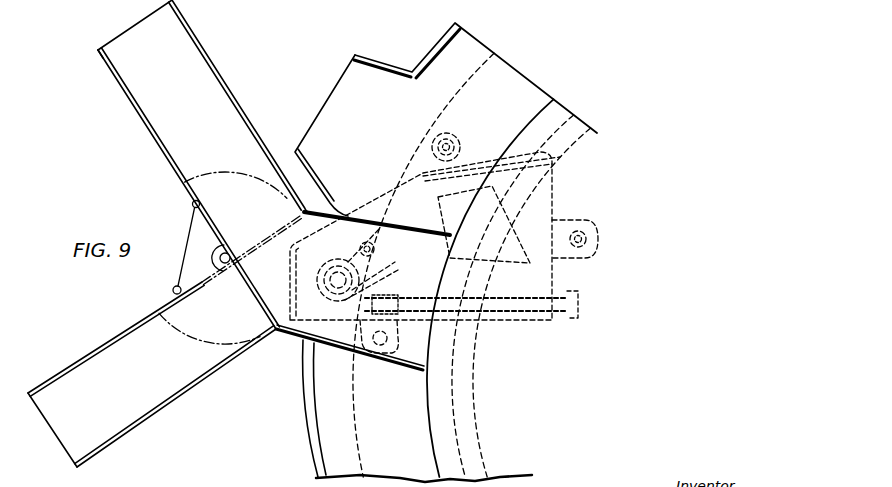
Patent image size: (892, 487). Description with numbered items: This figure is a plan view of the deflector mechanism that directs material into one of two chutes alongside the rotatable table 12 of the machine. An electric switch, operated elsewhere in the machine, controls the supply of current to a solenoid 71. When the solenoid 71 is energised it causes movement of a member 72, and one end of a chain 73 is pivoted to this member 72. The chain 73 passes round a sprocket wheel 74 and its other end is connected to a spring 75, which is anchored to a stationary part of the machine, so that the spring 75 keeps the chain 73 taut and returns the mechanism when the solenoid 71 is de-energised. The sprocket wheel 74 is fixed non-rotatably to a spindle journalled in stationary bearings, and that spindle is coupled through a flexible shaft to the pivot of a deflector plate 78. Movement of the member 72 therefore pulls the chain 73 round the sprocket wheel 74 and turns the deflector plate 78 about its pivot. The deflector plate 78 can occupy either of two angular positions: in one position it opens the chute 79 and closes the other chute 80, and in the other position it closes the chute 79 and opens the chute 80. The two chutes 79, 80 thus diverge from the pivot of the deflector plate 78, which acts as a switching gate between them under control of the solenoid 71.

The rotatable table 12 is at (533, 388).
The solenoid 71 is at (472, 165).
The member 72 is at (389, 264).
The chain 73 is at (356, 226).
The sprocket wheel 74 is at (320, 303).
The spring 75 is at (506, 321).
The deflector plate 78 is at (216, 231).
The chute 79 is at (182, 107).
The chute 80 is at (84, 420).